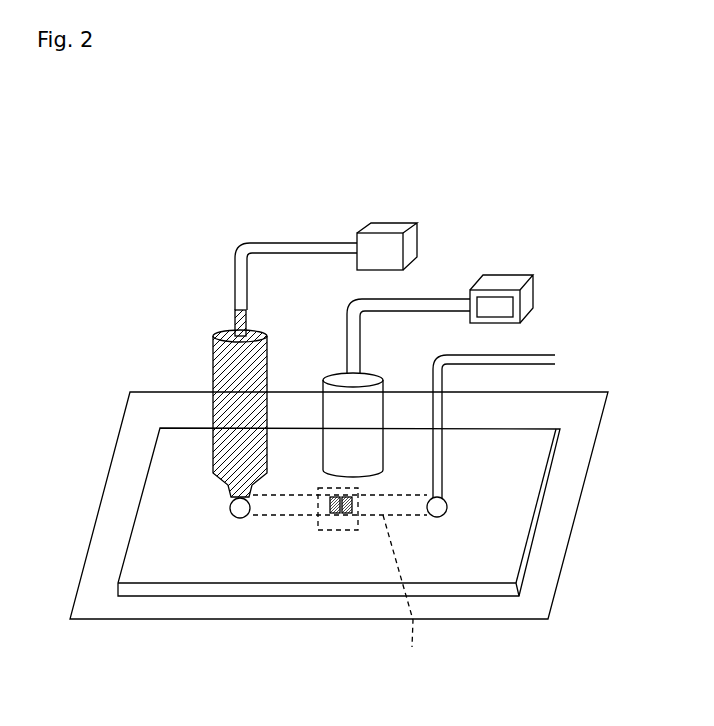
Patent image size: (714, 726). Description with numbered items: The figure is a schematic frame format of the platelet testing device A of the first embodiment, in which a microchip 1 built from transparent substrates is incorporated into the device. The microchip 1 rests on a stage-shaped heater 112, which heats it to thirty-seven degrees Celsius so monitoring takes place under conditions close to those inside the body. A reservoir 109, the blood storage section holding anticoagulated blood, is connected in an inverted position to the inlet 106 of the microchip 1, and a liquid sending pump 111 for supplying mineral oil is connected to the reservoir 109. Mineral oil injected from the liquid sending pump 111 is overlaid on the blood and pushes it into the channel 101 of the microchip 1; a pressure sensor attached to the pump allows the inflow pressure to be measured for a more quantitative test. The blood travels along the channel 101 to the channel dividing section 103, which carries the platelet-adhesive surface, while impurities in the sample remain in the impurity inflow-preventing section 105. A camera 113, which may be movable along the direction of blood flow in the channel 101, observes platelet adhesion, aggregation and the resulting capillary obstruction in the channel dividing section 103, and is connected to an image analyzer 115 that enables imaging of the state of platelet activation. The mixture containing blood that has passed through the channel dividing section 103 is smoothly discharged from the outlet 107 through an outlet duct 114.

The microchip 1 is at (527, 553).
The channel 101 is at (407, 601).
The channel dividing section 103 is at (340, 530).
The impurity inflow-preventing section 105 is at (278, 515).
The inlet 106 is at (230, 507).
The outlet 107 is at (447, 508).
The reservoir 109 is at (220, 331).
The liquid sending pump 111 is at (395, 210).
The stage-shaped heater 112 is at (150, 390).
The camera 113 is at (334, 373).
The outlet duct 114 is at (537, 349).
The image analyzer 115 is at (507, 275).
The platelet testing device A is at (490, 181).